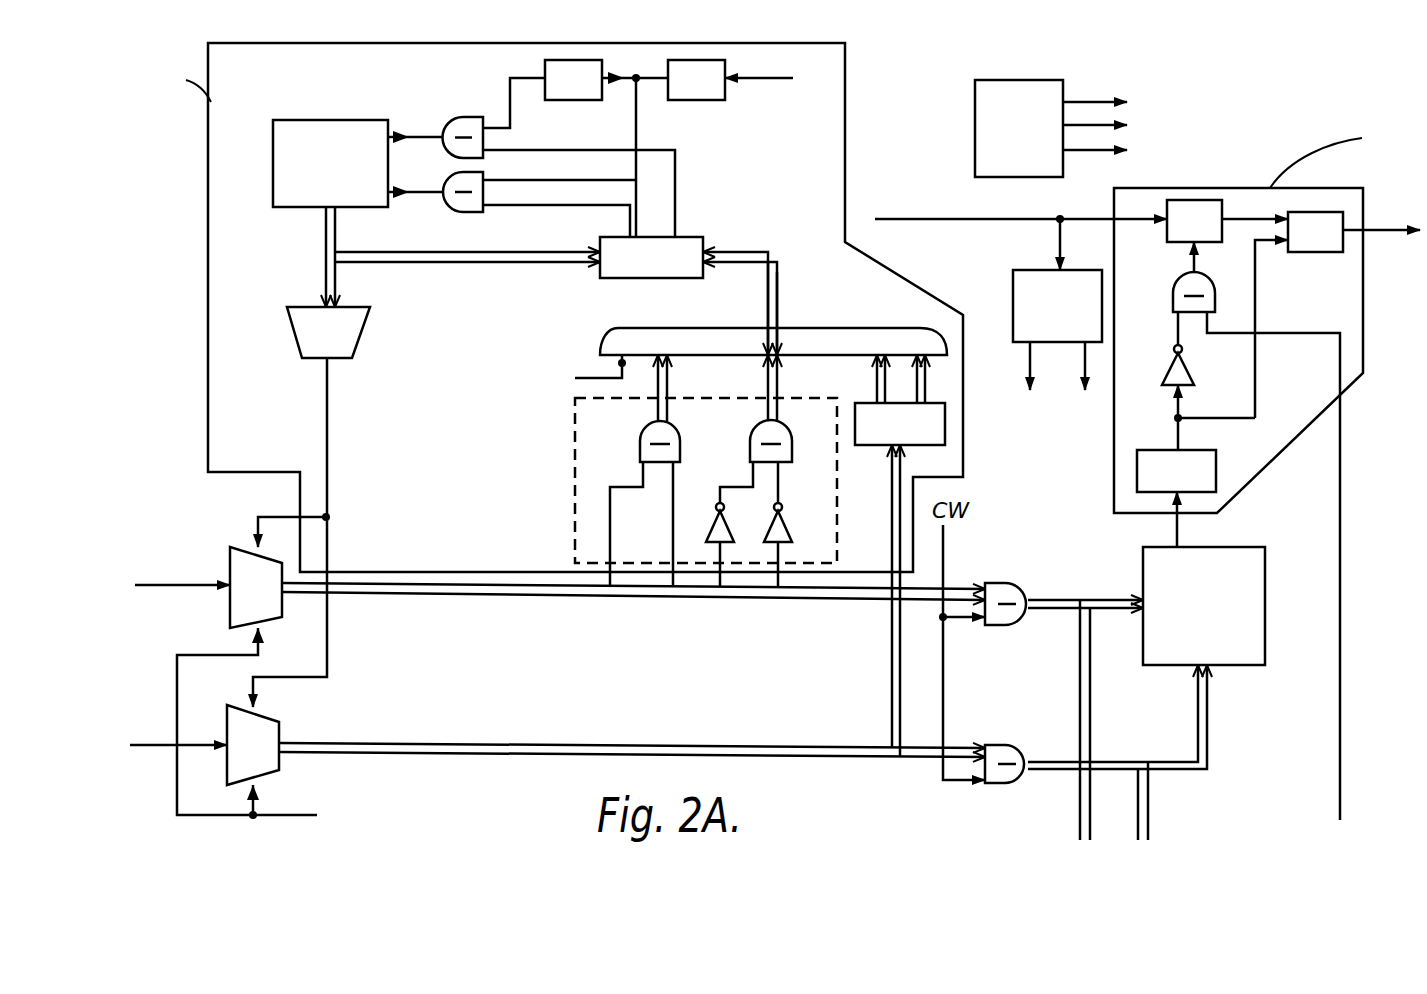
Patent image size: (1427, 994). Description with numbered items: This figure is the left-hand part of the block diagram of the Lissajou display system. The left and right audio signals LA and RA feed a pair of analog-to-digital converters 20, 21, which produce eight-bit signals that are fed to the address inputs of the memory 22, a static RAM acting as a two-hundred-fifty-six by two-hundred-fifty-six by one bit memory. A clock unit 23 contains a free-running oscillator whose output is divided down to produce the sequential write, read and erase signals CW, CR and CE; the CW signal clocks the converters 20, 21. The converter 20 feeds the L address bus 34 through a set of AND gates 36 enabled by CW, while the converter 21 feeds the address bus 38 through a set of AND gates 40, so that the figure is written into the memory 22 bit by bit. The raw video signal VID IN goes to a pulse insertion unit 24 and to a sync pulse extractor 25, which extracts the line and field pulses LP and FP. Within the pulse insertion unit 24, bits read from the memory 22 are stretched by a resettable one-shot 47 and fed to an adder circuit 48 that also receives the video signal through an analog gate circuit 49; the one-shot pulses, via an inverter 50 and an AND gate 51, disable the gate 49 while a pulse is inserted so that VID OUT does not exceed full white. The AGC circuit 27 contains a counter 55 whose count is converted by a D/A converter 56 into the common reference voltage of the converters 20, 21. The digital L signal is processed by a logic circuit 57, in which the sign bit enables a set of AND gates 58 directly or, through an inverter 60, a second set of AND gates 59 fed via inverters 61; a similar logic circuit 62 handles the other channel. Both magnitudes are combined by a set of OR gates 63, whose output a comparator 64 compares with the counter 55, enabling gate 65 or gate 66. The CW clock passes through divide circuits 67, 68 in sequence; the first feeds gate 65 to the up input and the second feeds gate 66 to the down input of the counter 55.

The analog-to-digital converter 20 is at (230, 562).
The analog-to-digital converter 21 is at (227, 725).
The memory 22 is at (1253, 540).
The clock unit 23 is at (975, 120).
The pulse insertion unit 24 is at (1331, 303).
The sync pulse extractor 25 is at (1013, 283).
The AGC circuit 27 is at (498, 340).
The L address bus 34 is at (1080, 675).
The AND gates 36 is at (992, 583).
The address bus 38 is at (1150, 810).
The AND gates 40 is at (1003, 784).
The resettable one-shot 47 is at (1137, 468).
The adder circuit 48 is at (1333, 211).
The analog gate circuit 49 is at (1213, 199).
The inverter 50 is at (1197, 370).
The AND gate 51 is at (1175, 290).
The counter 55 is at (327, 120).
The D/A converter 56 is at (287, 328).
The logic circuit 57 is at (572, 492).
The AND gates 58 is at (641, 430).
The AND gates 59 is at (751, 430).
The inverter 60 is at (717, 533).
The inverters 61 is at (790, 535).
The logic circuit 62 is at (911, 437).
The OR gates 63 is at (851, 327).
The comparator 64 is at (702, 235).
The gate 65 is at (467, 213).
The gate 66 is at (467, 115).
The divide circuit 67 is at (688, 102).
The divide circuit 68 is at (563, 102).